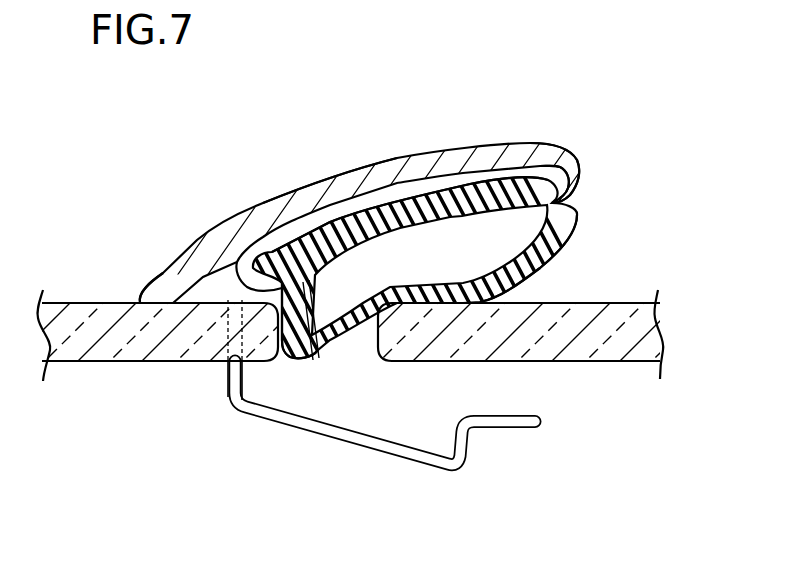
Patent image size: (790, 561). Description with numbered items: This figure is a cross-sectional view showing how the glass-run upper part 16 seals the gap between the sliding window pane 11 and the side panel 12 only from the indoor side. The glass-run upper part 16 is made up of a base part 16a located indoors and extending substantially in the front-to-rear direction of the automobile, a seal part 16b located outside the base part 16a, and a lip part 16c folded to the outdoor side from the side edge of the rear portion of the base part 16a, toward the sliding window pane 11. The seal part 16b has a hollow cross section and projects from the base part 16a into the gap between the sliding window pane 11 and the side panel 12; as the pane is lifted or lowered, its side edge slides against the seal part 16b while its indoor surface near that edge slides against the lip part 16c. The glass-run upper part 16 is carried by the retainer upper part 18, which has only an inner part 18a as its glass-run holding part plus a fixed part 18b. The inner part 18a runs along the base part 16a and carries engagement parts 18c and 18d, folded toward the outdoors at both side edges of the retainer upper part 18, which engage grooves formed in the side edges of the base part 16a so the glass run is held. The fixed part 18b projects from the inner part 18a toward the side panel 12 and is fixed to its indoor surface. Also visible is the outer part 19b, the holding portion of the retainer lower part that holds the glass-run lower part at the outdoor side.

The sliding window pane 11 is at (607, 362).
The side panel 12 is at (89, 362).
The glass-run upper part 16 is at (404, 255).
The base part 16a is at (400, 212).
The seal part 16b is at (327, 353).
The lip part 16c is at (548, 277).
The retainer upper part 18 is at (362, 289).
The inner part 18a is at (355, 178).
The fixed part 18b is at (162, 287).
The engagement part 18c is at (317, 360).
The engagement part 18d is at (528, 196).
The outer part 19b is at (400, 462).